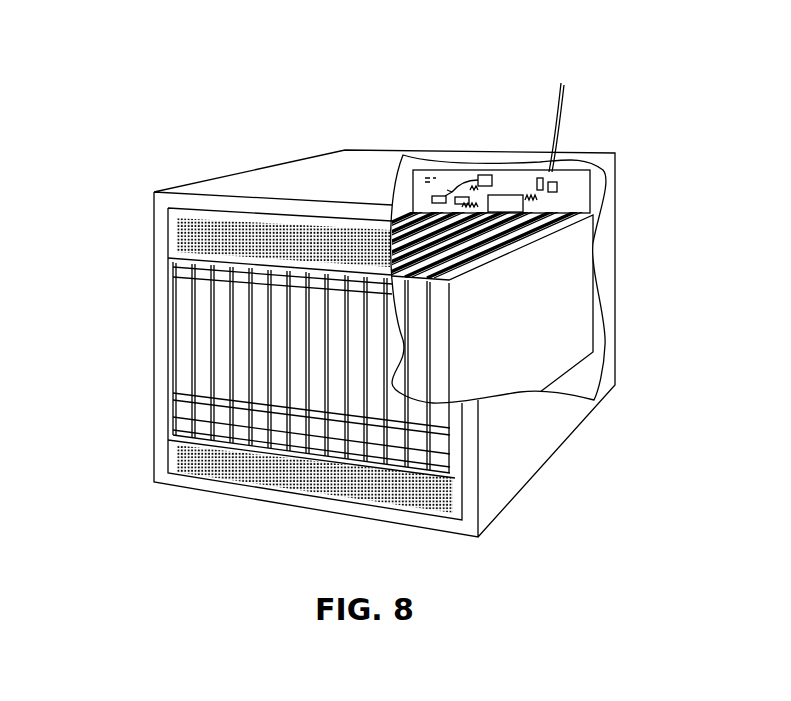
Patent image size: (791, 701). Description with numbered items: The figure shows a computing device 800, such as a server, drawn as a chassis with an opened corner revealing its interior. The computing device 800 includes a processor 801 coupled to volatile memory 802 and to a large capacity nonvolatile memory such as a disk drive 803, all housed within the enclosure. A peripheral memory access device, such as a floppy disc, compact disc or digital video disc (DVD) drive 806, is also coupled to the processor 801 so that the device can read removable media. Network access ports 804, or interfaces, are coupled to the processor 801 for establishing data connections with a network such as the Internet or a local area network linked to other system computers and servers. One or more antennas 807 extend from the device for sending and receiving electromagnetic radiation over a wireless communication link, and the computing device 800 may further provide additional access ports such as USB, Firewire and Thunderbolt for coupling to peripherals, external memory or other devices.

The computing device 800 is at (128, 73).
The processor 801 is at (540, 237).
The volatile memory 802 is at (573, 210).
The disk drive 803 is at (220, 315).
The network access ports 804 is at (200, 341).
The DVD drive 806 is at (240, 371).
The antennas 807 is at (561, 83).